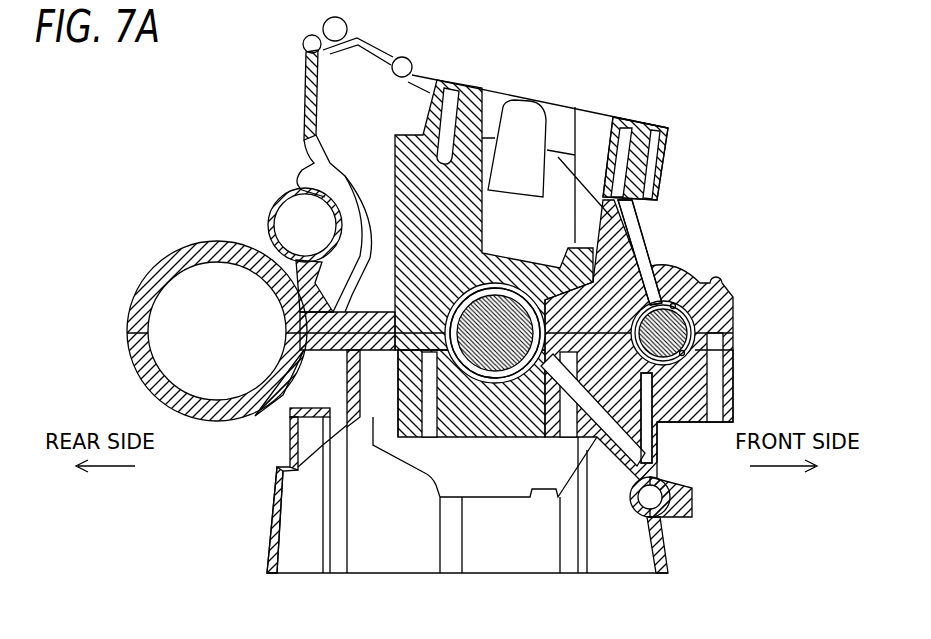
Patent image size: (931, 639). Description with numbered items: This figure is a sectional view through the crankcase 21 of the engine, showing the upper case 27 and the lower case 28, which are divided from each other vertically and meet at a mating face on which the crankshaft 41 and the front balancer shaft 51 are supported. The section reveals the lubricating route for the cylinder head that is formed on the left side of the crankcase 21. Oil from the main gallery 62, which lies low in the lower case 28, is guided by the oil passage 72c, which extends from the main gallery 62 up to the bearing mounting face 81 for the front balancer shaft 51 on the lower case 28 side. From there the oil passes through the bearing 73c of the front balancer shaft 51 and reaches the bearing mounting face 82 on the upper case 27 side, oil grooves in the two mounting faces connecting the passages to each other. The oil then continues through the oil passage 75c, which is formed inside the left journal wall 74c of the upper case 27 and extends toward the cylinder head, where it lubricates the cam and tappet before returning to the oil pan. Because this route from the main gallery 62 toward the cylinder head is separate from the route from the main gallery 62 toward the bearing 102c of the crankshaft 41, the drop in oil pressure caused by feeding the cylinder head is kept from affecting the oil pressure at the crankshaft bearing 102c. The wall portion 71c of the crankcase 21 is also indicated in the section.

The crankcase 21 is at (430, 295).
The crankshaft 41 is at (495, 298).
The bearing of the crankshaft 102c is at (498, 370).
The upper case 27 is at (664, 127).
The oil passage 75c is at (636, 246).
The left journal wall 74c is at (667, 280).
The bearing mounting face 82 is at (673, 306).
The front balancer shaft 51 is at (682, 316).
The bearing of the front balancer shaft 73c is at (693, 325).
The bearing mounting face 81 is at (682, 353).
The crankcase wall portion 71c is at (690, 373).
The oil passage 72c is at (645, 402).
The main gallery 62 is at (655, 497).
The lower case 28 is at (660, 541).